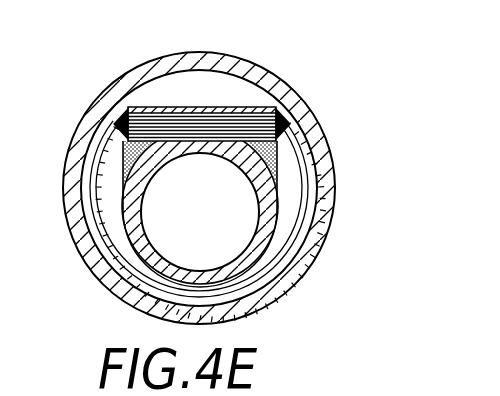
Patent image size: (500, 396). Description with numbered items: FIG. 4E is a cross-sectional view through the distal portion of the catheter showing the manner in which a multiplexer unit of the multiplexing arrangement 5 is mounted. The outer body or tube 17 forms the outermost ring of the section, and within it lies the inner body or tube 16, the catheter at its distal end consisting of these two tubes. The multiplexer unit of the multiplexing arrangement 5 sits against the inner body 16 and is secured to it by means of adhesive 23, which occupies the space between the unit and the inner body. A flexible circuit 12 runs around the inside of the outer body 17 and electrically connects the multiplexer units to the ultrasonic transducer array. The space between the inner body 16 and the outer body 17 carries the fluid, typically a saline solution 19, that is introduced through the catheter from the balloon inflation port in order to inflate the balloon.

The multiplexing arrangement 5 is at (183, 137).
The flexible circuit 12 is at (297, 250).
The inner body 16 is at (128, 214).
The outer body 17 is at (282, 90).
The saline solution 19 is at (157, 99).
The adhesive 23 is at (275, 166).